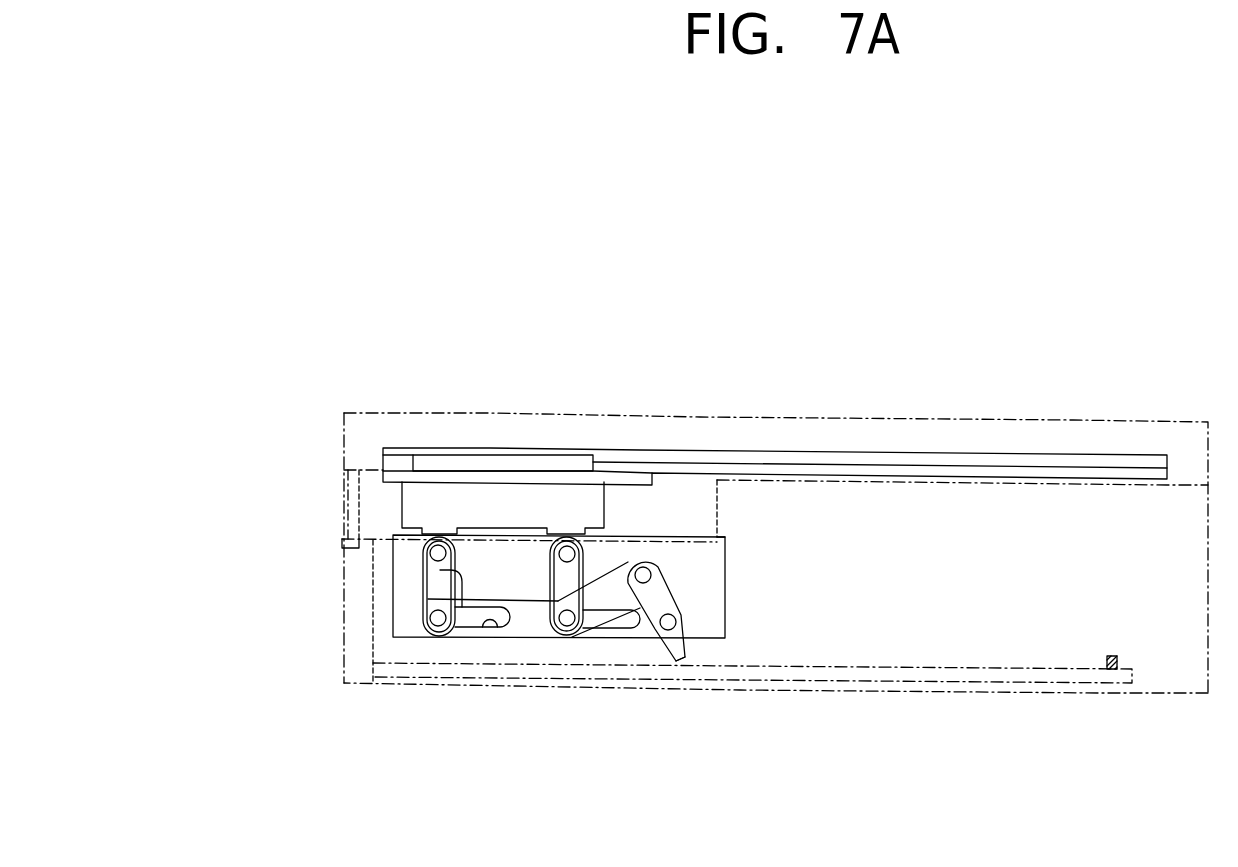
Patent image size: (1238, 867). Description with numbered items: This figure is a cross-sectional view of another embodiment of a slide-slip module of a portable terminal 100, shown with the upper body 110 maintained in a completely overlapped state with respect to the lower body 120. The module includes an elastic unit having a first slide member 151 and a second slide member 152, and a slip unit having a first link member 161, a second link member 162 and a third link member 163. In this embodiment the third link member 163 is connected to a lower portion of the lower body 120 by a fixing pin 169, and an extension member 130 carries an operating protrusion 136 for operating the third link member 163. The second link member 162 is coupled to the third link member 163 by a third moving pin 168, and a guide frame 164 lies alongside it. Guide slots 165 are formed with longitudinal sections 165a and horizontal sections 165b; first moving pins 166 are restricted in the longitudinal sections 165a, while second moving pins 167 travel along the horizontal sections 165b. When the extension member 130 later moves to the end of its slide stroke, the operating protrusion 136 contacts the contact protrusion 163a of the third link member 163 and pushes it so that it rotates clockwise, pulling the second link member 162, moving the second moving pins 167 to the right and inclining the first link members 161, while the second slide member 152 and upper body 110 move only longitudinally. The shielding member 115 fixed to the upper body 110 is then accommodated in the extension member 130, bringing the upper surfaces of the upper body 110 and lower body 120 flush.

The mobile terminal 100 is at (940, 304).
The upper body 110 is at (1073, 420).
The shielding member 115 is at (346, 510).
The lower body 120 is at (1147, 693).
The extension member 130 is at (814, 682).
The operating protrusion 136 is at (1107, 669).
The first slide member 151 is at (615, 470).
The second slide member 152 is at (488, 478).
The first link member 161 is at (423, 598).
The second link member 162 is at (532, 628).
The third link member 163 is at (664, 546).
The contact protrusion 163a is at (682, 665).
The guide frame 164 is at (718, 592).
The guide slot 165 is at (471, 716).
The longitudinal section 165a is at (461, 607).
The horizontal section 165b is at (489, 628).
The first moving pin 166 is at (432, 553).
The second moving pin 167 is at (433, 616).
The third moving pin 168 is at (643, 573).
The fixing pin 169 is at (681, 580).